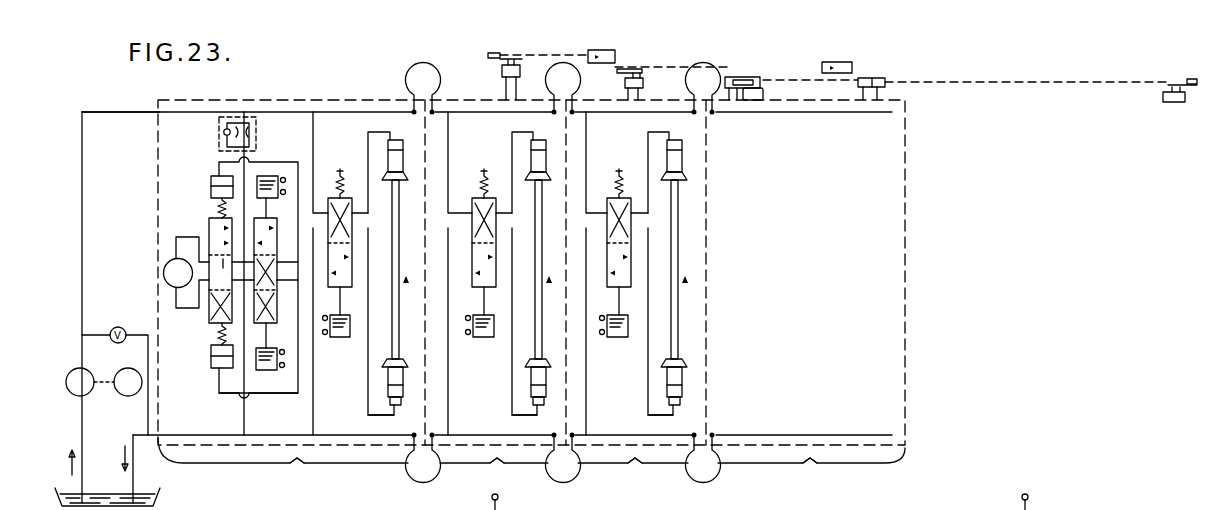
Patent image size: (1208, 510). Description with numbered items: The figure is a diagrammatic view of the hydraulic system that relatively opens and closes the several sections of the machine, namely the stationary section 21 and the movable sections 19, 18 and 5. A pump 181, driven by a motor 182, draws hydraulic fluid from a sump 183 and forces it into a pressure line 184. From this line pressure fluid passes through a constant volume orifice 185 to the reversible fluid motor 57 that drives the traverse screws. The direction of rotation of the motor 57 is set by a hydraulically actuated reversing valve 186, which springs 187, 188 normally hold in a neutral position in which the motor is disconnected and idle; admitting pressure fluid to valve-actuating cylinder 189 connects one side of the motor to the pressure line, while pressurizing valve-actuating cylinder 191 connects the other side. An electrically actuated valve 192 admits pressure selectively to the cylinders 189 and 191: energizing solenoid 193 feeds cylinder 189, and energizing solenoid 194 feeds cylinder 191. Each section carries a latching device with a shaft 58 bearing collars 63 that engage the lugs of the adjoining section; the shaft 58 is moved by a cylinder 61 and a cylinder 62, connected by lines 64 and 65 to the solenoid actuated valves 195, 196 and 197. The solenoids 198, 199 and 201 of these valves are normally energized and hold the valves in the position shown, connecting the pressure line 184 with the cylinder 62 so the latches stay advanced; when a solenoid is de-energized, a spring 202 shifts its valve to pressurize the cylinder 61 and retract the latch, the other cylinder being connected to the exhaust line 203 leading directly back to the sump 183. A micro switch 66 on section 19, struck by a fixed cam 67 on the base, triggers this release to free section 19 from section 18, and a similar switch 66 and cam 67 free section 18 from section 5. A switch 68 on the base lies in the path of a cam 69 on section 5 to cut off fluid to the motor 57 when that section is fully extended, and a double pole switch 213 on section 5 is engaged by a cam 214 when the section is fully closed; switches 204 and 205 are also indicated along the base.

The section 5 is at (813, 487).
The section 18 is at (644, 487).
The section 19 is at (506, 487).
The section 21 is at (306, 487).
The reversible motor 57 is at (164, 272).
The shaft 58 is at (394, 246).
The cylinder 61 is at (396, 157).
The cylinder 62 is at (403, 393).
The collars 63 is at (403, 176).
The upper hydraulic line 64 is at (390, 137).
The lower hydraulic line 65 is at (394, 415).
The micro switch 66 is at (502, 71).
The fixed cam 67 is at (600, 50).
The switch 68 is at (1175, 103).
The cam 69 is at (878, 78).
The pump 181 is at (70, 369).
The motor 182 is at (130, 396).
The sump 183 is at (160, 496).
The pressure line 184 is at (113, 111).
The constant volume orifice 185 is at (256, 135).
The reversing valve 186 is at (208, 222).
The spring 187 is at (211, 336).
The spring 188 is at (211, 210).
The valve-actuating cylinder 189 is at (211, 362).
The valve-actuating cylinder 191 is at (211, 178).
The electrically actuated valve 192 is at (290, 218).
The solenoid 193 is at (265, 370).
The solenoid 194 is at (268, 176).
The solenoid actuated valve 195 is at (328, 281).
The solenoid actuated valve 196 is at (471, 281).
The solenoid actuated valve 197 is at (606, 281).
The solenoid 198 is at (343, 338).
The solenoid 199 is at (486, 338).
The solenoid 201 is at (620, 338).
The spring 202 is at (356, 163).
The exhaust line 203 is at (258, 408).
The switch 204 is at (670, 504).
The switch 205 is at (865, 504).
The double pole switch 213 is at (764, 94).
The cam 214 is at (745, 78).